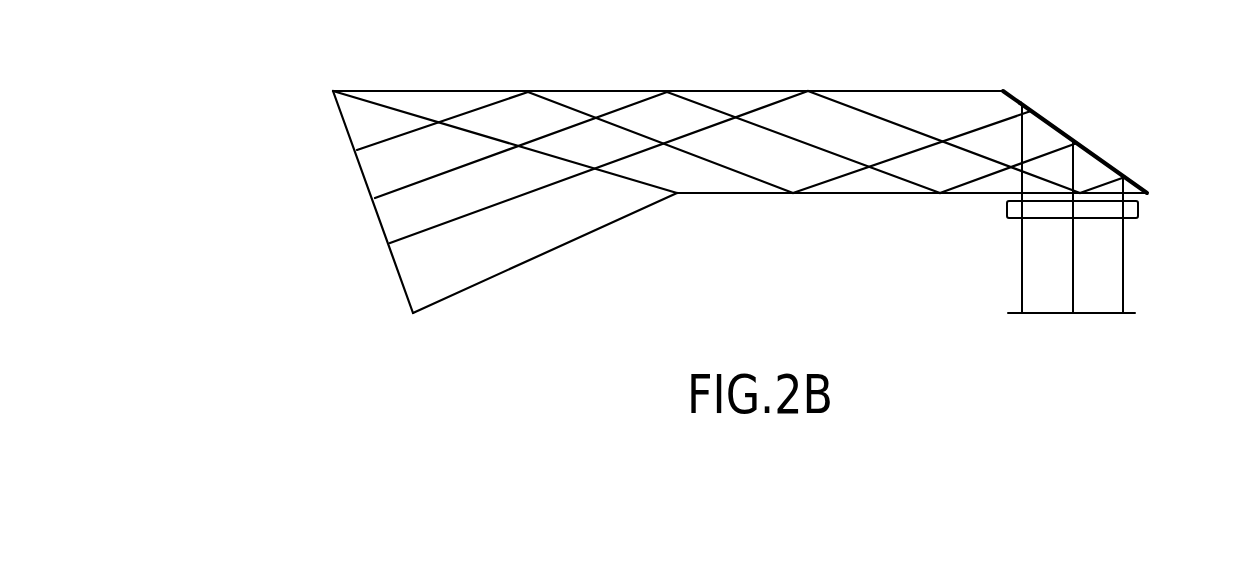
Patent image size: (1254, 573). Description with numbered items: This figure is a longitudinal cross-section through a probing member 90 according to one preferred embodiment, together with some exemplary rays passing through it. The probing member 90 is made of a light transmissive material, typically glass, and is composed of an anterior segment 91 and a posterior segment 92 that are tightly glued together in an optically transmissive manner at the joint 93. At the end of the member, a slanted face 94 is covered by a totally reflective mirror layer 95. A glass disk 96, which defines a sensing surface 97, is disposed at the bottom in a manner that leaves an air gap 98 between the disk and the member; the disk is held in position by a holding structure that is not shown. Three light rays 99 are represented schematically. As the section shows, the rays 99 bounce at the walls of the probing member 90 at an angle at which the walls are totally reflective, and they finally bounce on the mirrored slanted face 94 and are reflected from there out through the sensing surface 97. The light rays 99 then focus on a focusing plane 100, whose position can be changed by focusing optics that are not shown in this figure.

The probing member 90 is at (723, 91).
The anterior segment 91 is at (930, 111).
The posterior segment 92 is at (508, 240).
The glued joint 93 is at (557, 158).
The slanted face 94 is at (1045, 127).
The totally reflective mirror layer 95 is at (1067, 136).
The glass disk 96 is at (1140, 208).
The sensing surface 97 is at (1093, 220).
The air gap 98 is at (1007, 197).
The light rays 99 is at (381, 141).
The focusing plane 100 is at (1055, 313).